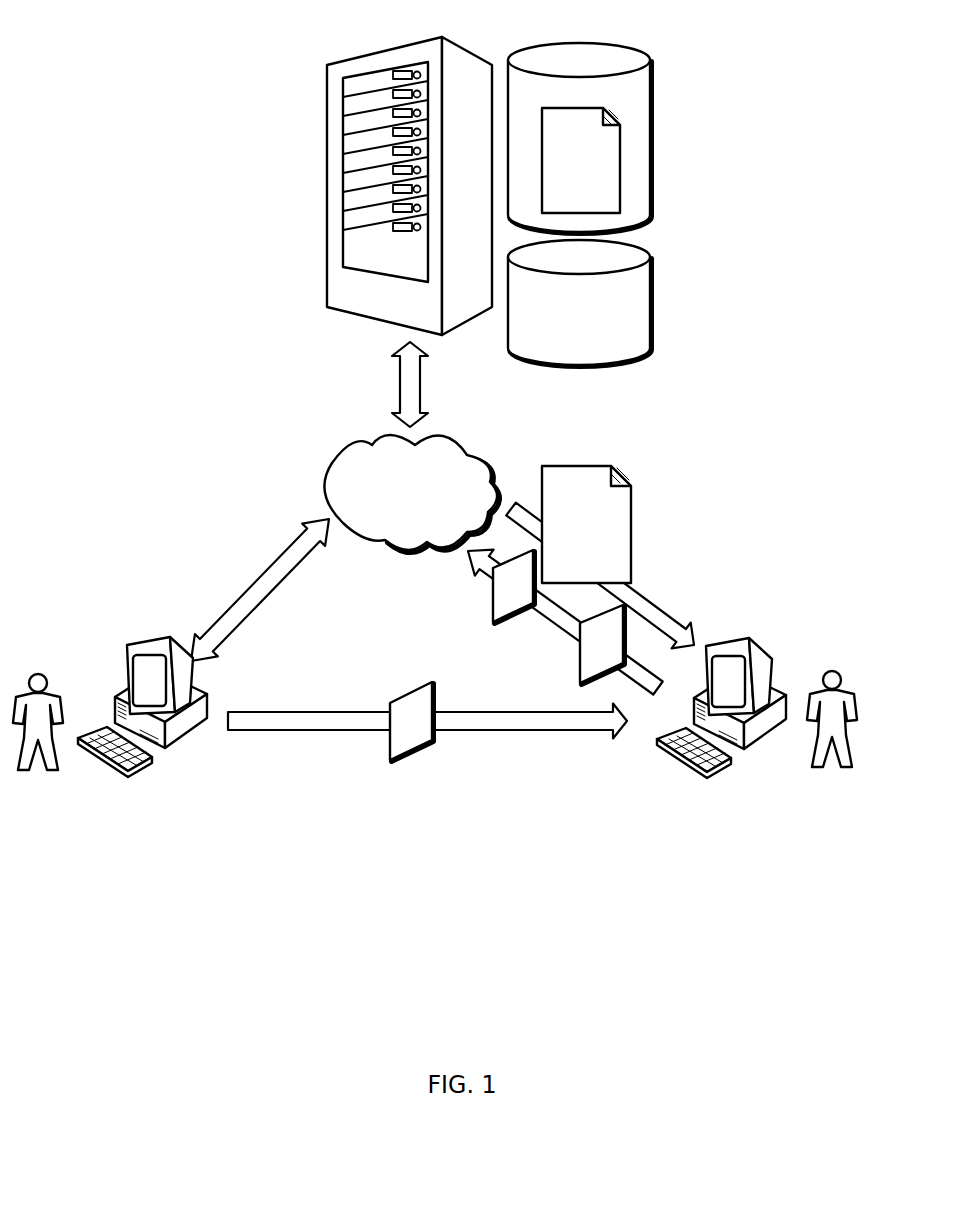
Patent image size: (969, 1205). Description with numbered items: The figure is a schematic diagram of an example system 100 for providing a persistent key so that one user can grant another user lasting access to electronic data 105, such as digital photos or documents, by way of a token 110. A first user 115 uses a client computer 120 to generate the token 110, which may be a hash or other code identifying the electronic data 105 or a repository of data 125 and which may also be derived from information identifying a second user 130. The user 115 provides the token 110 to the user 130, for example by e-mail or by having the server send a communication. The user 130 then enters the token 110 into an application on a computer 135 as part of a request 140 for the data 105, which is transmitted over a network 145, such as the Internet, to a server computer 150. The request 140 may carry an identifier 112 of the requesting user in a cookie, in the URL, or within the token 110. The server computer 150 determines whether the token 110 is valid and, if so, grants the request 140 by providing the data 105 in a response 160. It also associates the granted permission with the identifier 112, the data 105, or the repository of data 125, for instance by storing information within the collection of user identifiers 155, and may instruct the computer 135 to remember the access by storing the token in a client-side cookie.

The system 100 is at (163, 80).
The electronic data 105 is at (572, 204).
The token 110 is at (579, 665).
The identifier 112 is at (493, 620).
The user 115 is at (43, 673).
The client computer 120 is at (176, 740).
The repository of data 125 is at (565, 74).
The user 130 is at (829, 670).
The computer 135 is at (691, 767).
The request 140 is at (481, 578).
The network 145 is at (400, 536).
The server computer 150 is at (327, 79).
The collection of user identifiers 155 is at (572, 270).
The response 160 is at (652, 597).